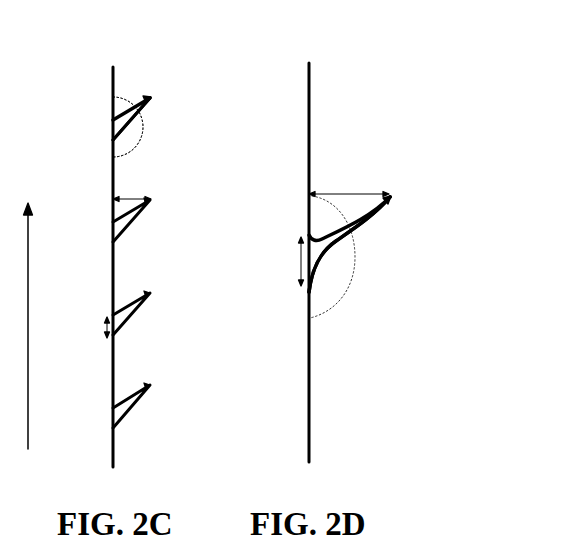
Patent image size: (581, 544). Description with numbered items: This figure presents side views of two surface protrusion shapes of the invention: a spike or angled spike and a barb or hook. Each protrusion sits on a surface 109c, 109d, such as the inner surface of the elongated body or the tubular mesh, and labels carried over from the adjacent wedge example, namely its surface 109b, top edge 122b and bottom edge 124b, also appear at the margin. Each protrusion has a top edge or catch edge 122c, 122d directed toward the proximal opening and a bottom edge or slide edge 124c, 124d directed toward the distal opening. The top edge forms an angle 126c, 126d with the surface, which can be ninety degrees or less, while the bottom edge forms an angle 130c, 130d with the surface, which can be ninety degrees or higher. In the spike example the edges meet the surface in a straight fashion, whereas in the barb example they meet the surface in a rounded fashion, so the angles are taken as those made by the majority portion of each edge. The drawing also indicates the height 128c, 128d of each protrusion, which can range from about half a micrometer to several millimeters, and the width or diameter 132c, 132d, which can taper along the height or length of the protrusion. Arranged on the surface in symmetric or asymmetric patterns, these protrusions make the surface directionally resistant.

In FIG. 2C, the surface 109b is at (26, 326).
In FIG. 2C, the surface 109c is at (113, 255).
In FIG. 2D, the surface 109d is at (310, 378).
In FIG. 2C, the top edge 122b is at (16, 50).
In FIG. 2C, the top edge 122c is at (140, 100).
In FIG. 2D, the top edge 122d is at (359, 215).
In FIG. 2C, the bottom edge 124b is at (0, 95).
In FIG. 2C, the bottom edge 124c is at (142, 112).
In FIG. 2D, the bottom edge 124d is at (360, 238).
In FIG. 2C, the angle 126c is at (118, 106).
In FIG. 2D, the angle 126d is at (325, 220).
In FIG. 2C, the height 128c is at (113, 207).
In FIG. 2D, the height 128d is at (343, 193).
In FIG. 2C, the angle 130c is at (122, 147).
In FIG. 2D, the angle 130c is at (463, 305).
In FIG. 2D, the angle 130d is at (325, 281).
In FIG. 2C, the width or diameter 132c is at (106, 340).
In FIG. 2D, the width or diameter 132d is at (297, 256).